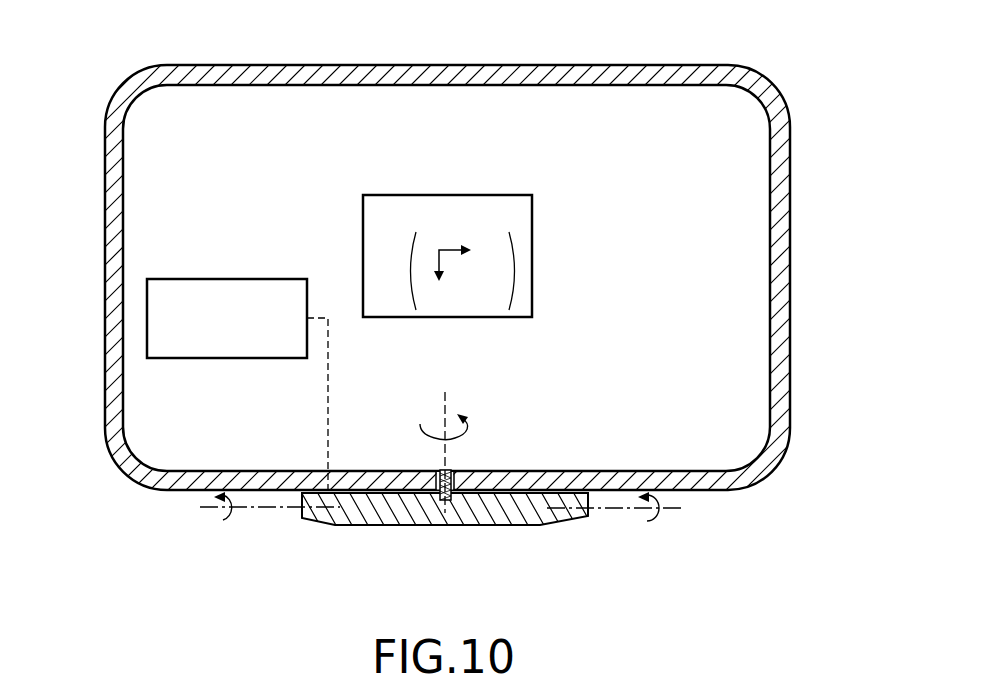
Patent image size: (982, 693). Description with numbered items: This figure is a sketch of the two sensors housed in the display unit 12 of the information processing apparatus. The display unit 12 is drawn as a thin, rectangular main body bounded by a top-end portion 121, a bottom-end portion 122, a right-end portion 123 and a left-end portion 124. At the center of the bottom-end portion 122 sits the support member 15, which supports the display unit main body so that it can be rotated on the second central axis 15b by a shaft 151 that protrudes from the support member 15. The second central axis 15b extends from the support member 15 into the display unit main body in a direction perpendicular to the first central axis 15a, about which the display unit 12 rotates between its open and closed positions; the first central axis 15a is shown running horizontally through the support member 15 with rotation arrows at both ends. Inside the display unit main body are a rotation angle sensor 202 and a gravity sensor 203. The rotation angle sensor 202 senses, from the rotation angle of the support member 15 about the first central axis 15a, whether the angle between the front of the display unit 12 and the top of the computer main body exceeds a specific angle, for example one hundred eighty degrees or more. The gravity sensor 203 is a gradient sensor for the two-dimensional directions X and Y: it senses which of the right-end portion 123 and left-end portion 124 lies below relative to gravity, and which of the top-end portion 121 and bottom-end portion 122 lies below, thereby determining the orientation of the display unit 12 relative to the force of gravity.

The display unit 12 is at (791, 268).
The top-end portion 121 is at (293, 66).
The bottom-end portion 122 is at (185, 492).
The right-end portion 123 is at (790, 195).
The left-end portion 124 is at (105, 265).
The rotation angle sensor 202 is at (248, 279).
The gravity sensor 203 is at (532, 243).
The support member 15 is at (408, 508).
The shaft 151 is at (452, 468).
The second central axis 15b is at (447, 400).
The first central axis 15a is at (256, 512).